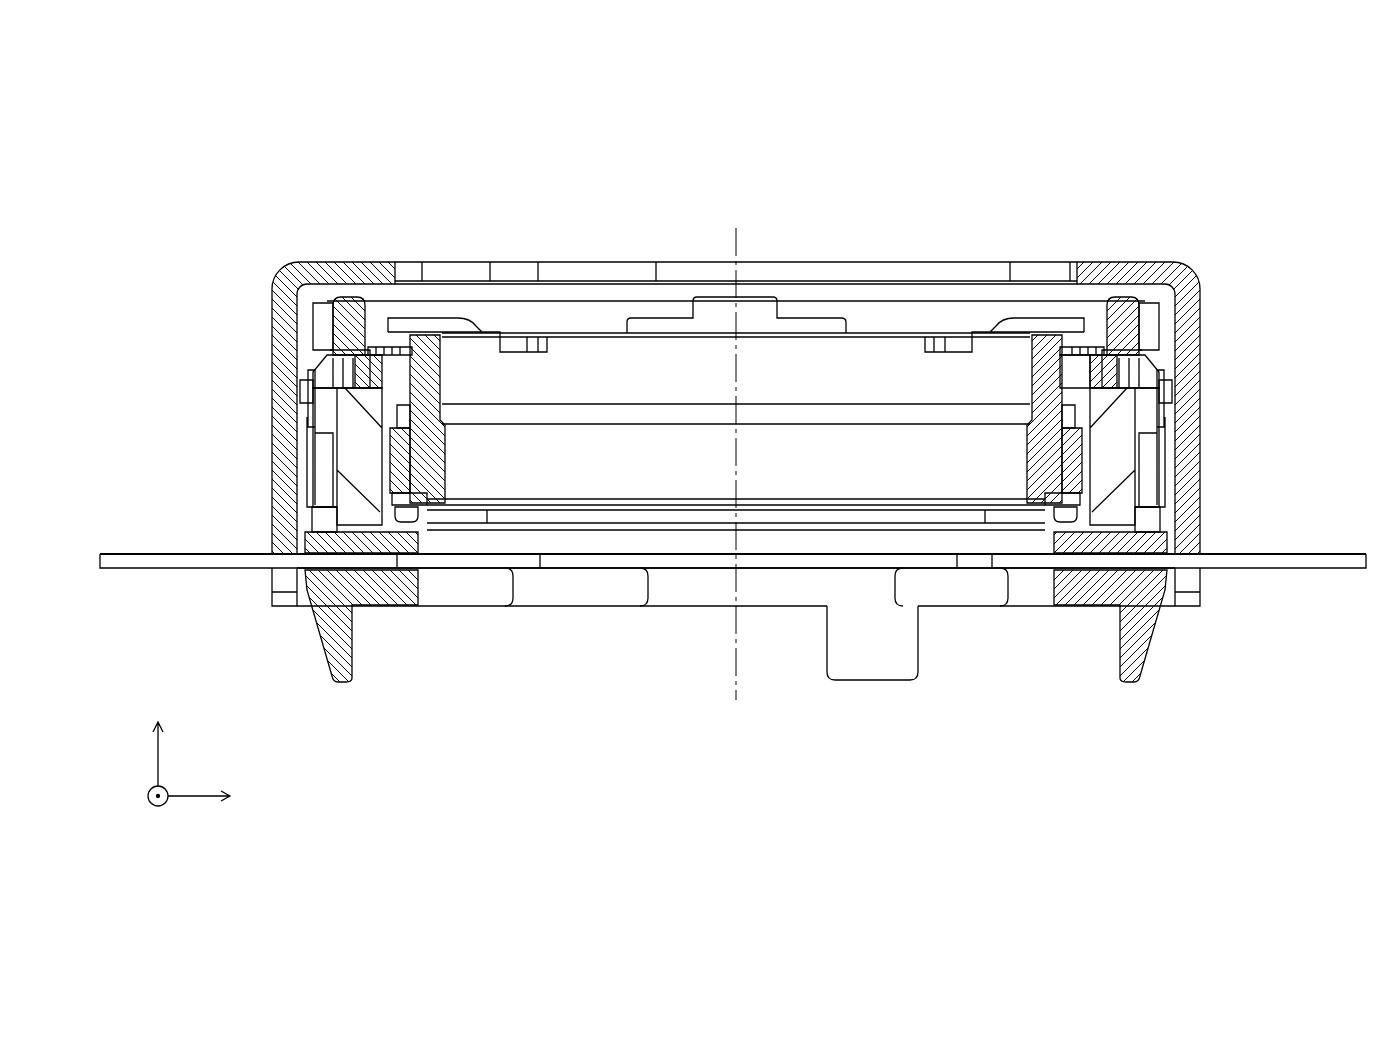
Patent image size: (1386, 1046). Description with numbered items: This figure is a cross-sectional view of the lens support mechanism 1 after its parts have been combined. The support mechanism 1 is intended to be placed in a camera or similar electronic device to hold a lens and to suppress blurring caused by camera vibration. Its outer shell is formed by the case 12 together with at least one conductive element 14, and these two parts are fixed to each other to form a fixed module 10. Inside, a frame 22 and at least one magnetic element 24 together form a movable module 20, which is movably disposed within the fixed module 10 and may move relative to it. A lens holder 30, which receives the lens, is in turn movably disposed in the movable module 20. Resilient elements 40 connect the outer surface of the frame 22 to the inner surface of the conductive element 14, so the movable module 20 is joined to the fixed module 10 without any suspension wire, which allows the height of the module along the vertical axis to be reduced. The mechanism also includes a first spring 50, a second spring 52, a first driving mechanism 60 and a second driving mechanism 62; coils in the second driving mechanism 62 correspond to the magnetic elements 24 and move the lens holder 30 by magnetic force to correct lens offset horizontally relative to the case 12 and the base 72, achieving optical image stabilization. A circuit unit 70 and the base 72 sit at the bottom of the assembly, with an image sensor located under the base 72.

The lens support mechanism 1 is at (142, 145).
The fixed module 10 is at (312, 97).
The case 12 is at (1240, 362).
The conductive element 14 is at (885, 318).
The movable module 20 is at (444, 97).
The frame 22 is at (1240, 330).
The magnetic element 24 is at (1240, 434).
The lens holder 30 is at (425, 360).
The resilient element 40 is at (307, 398).
The first spring 50 is at (1082, 350).
The second spring 52 is at (455, 508).
The first driving mechanism 60 is at (345, 462).
The second driving mechanism 62 is at (385, 545).
The circuit unit 70 is at (213, 562).
The base 72 is at (331, 652).